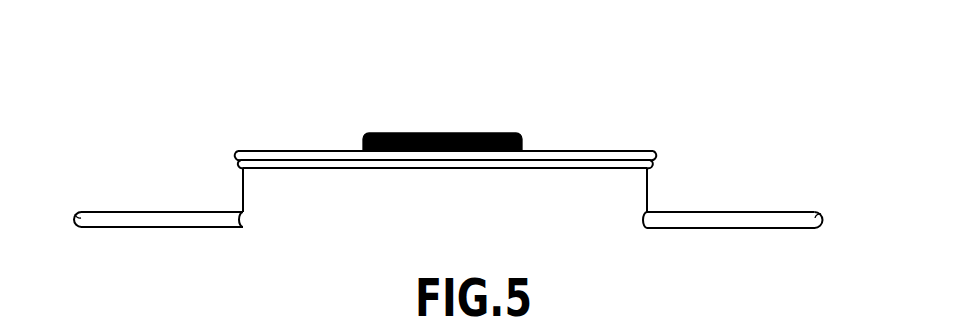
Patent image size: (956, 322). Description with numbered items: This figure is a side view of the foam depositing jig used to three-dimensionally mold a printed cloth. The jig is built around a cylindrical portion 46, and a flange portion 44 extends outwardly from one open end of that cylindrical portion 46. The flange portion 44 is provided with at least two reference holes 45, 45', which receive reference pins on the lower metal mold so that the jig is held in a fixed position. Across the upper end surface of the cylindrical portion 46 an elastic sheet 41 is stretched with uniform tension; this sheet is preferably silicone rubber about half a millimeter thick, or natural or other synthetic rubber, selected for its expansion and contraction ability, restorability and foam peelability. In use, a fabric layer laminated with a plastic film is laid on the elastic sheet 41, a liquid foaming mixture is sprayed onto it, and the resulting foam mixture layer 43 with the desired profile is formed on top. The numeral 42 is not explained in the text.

The elastic sheet 41 is at (570, 152).
The top layer 42 is at (347, 150).
The foam mixture layer 43 is at (444, 133).
The flange portion 44 is at (757, 212).
The reference hole 45 is at (731, 140).
The reference hole 45' is at (155, 155).
The cylindrical portion 46 is at (650, 190).